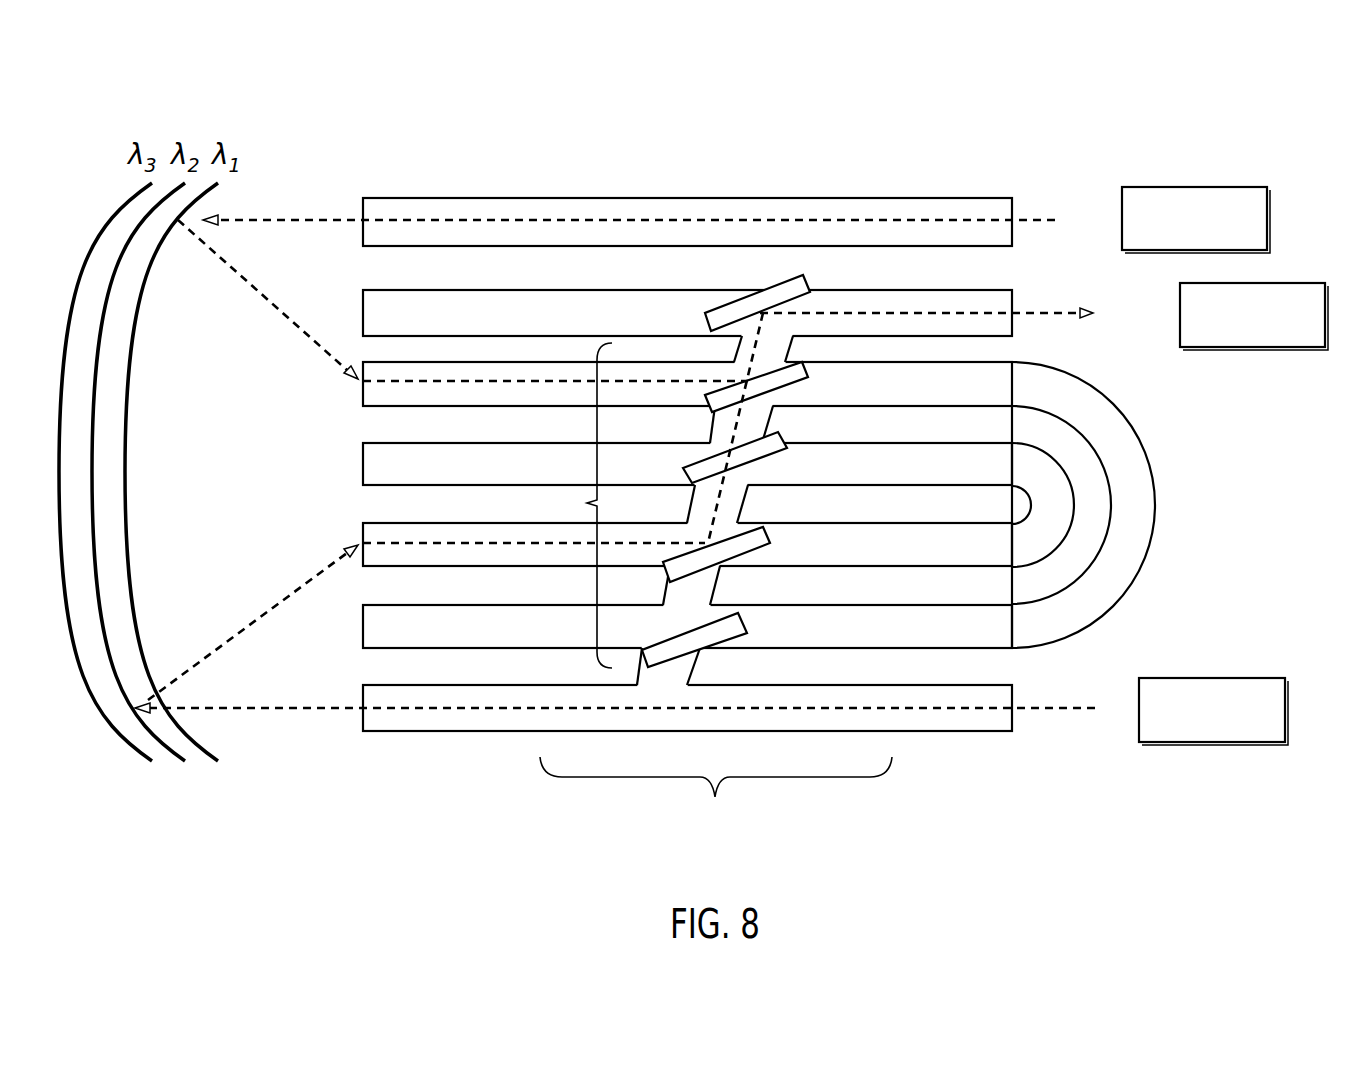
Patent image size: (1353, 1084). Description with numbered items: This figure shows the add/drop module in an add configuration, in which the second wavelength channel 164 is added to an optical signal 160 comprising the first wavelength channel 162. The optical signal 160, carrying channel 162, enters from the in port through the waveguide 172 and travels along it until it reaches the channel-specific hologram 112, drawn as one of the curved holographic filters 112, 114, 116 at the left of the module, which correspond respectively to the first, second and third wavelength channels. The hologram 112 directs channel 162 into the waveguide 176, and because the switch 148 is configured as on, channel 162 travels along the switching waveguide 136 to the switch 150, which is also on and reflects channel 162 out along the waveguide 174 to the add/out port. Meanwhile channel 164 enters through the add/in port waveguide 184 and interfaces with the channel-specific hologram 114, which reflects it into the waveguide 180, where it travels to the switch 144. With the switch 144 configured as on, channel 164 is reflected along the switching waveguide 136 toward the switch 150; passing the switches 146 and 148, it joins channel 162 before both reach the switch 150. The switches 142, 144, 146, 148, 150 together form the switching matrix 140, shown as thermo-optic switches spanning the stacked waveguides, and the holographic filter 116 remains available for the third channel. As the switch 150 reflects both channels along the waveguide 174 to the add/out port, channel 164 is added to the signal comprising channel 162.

The holographic filter 112 is at (217, 764).
The holographic filter 114 is at (185, 764).
The holographic filter 116 is at (150, 765).
The switching waveguide 136 is at (586, 503).
The switching matrix 140 is at (716, 795).
The switch 142 is at (738, 623).
The switch 144 is at (765, 527).
The switch 146 is at (780, 443).
The switch 148 is at (805, 365).
The switch 150 is at (797, 292).
The optical signal 160 is at (1137, 62).
The wavelength λ1 channel 162 is at (262, 298).
The wavelength λ2 channel 164 is at (247, 628).
The waveguide 172 is at (935, 198).
The waveguide 174 is at (935, 290).
The waveguide 176 is at (932, 408).
The waveguide 180 is at (932, 568).
The add/in port waveguide 184 is at (935, 733).